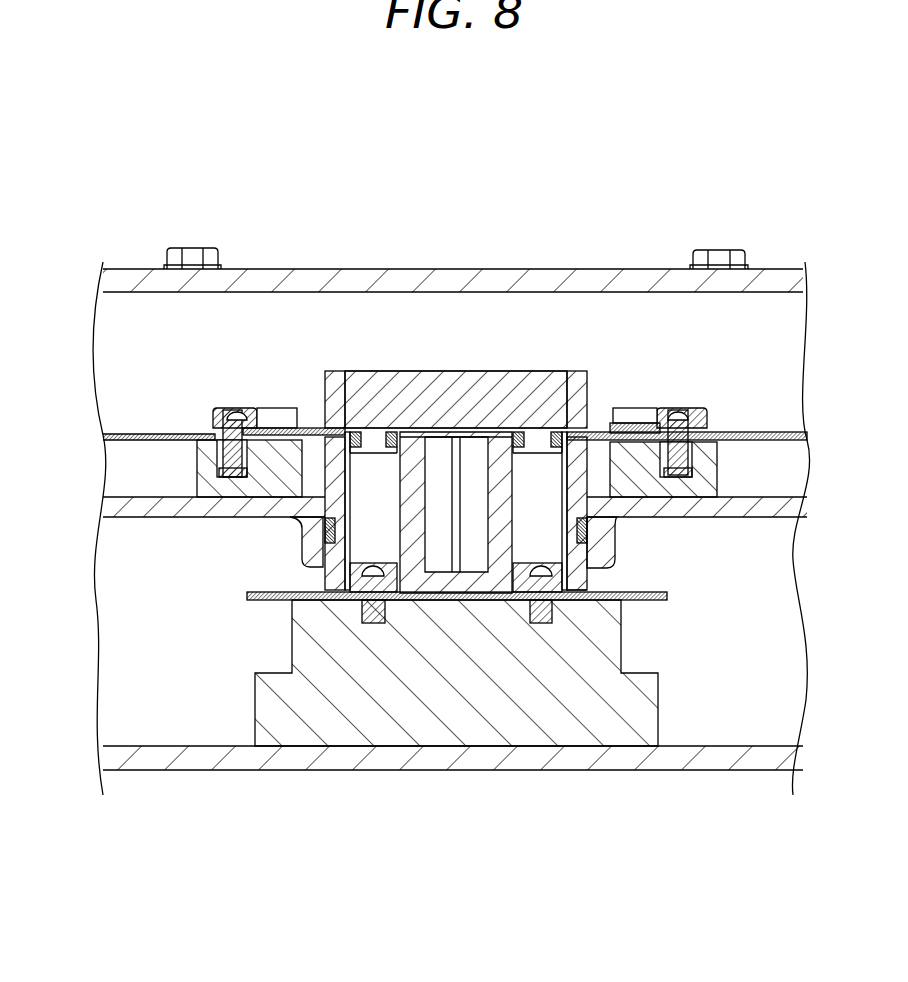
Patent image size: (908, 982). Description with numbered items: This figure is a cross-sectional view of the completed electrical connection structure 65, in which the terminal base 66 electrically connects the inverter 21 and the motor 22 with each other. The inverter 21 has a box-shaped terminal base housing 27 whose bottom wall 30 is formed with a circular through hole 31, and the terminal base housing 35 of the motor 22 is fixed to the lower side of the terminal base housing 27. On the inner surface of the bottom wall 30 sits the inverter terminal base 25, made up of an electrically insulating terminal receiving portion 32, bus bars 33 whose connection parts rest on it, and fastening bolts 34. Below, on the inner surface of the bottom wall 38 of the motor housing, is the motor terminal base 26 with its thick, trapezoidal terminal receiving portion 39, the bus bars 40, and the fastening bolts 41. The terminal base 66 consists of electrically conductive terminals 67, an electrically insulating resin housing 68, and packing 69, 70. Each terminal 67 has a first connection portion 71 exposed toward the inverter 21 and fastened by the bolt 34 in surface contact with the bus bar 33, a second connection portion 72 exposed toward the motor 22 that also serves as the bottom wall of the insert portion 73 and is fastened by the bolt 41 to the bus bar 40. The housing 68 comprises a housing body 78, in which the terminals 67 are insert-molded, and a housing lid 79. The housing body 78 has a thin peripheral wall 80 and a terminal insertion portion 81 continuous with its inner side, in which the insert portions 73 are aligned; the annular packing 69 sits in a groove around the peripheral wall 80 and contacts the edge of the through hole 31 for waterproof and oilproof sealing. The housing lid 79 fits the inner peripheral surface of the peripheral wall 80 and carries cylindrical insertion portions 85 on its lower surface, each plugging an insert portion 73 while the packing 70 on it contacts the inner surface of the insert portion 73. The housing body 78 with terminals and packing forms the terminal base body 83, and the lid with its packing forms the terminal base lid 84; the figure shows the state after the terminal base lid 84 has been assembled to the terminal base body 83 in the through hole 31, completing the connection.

The inverter 21 is at (138, 264).
The motor 22 is at (161, 780).
The inverter terminal base 25 is at (172, 429).
The motor terminal base 26 is at (628, 642).
The terminal base housing 27 is at (114, 329).
The bottom wall 30 is at (126, 508).
The through hole 31 is at (322, 518).
The terminal receiving portion 32 is at (195, 480).
The bus bar 33 is at (132, 433).
The fastening bolt 34 is at (223, 407).
The terminal base housing 35 is at (109, 717).
The bottom wall 38 is at (197, 757).
The terminal receiving portion 39 is at (263, 707).
The bus bar 40 is at (262, 592).
The fastening bolt 41 is at (378, 612).
The electrical connection structure 65 is at (645, 240).
The terminal base 66 is at (528, 331).
The terminal 67 is at (362, 472).
The housing 68 is at (750, 810).
The packing 69 is at (605, 536).
The packing 70 is at (591, 437).
The first connection portion 71 is at (312, 425).
The second connection portion 72 is at (358, 590).
The insert portion 73 is at (416, 458).
The housing body 78 is at (592, 574).
The housing lid 79 is at (413, 371).
The peripheral wall 80 is at (331, 383).
The terminal insertion portion 81 is at (428, 445).
The terminal base body 83 is at (592, 510).
The terminal base lid 84 is at (544, 378).
The cylindrical insertion portion 85 is at (565, 470).